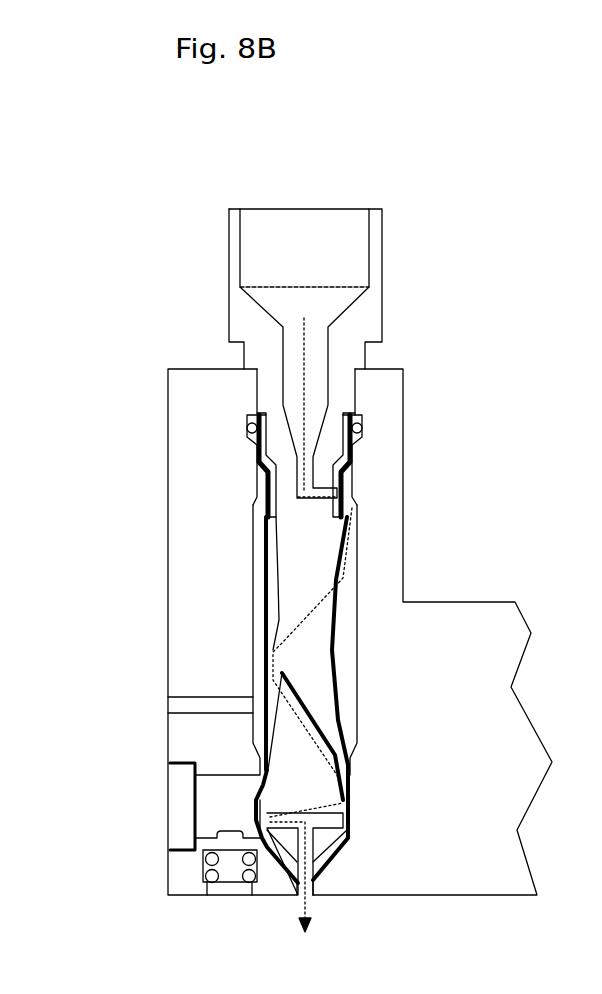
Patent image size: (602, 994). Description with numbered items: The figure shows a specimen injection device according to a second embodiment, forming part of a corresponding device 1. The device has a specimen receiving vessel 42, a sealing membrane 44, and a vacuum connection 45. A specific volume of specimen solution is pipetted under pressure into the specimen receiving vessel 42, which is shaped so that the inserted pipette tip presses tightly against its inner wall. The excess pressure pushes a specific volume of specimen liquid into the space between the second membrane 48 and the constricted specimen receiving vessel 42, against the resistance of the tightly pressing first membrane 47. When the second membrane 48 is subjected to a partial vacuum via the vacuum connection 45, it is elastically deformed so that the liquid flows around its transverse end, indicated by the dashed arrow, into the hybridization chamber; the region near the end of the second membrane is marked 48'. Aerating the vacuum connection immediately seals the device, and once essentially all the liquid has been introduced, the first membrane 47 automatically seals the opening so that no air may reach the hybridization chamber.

The device 1 is at (495, 705).
The specimen receiving vessel 42 is at (253, 332).
The sealing membrane 44 is at (240, 795).
The vacuum connection 45 is at (228, 890).
The first membrane 47 is at (353, 469).
The second membrane 48 is at (302, 648).
The nozzle tip outlet 48' is at (222, 848).